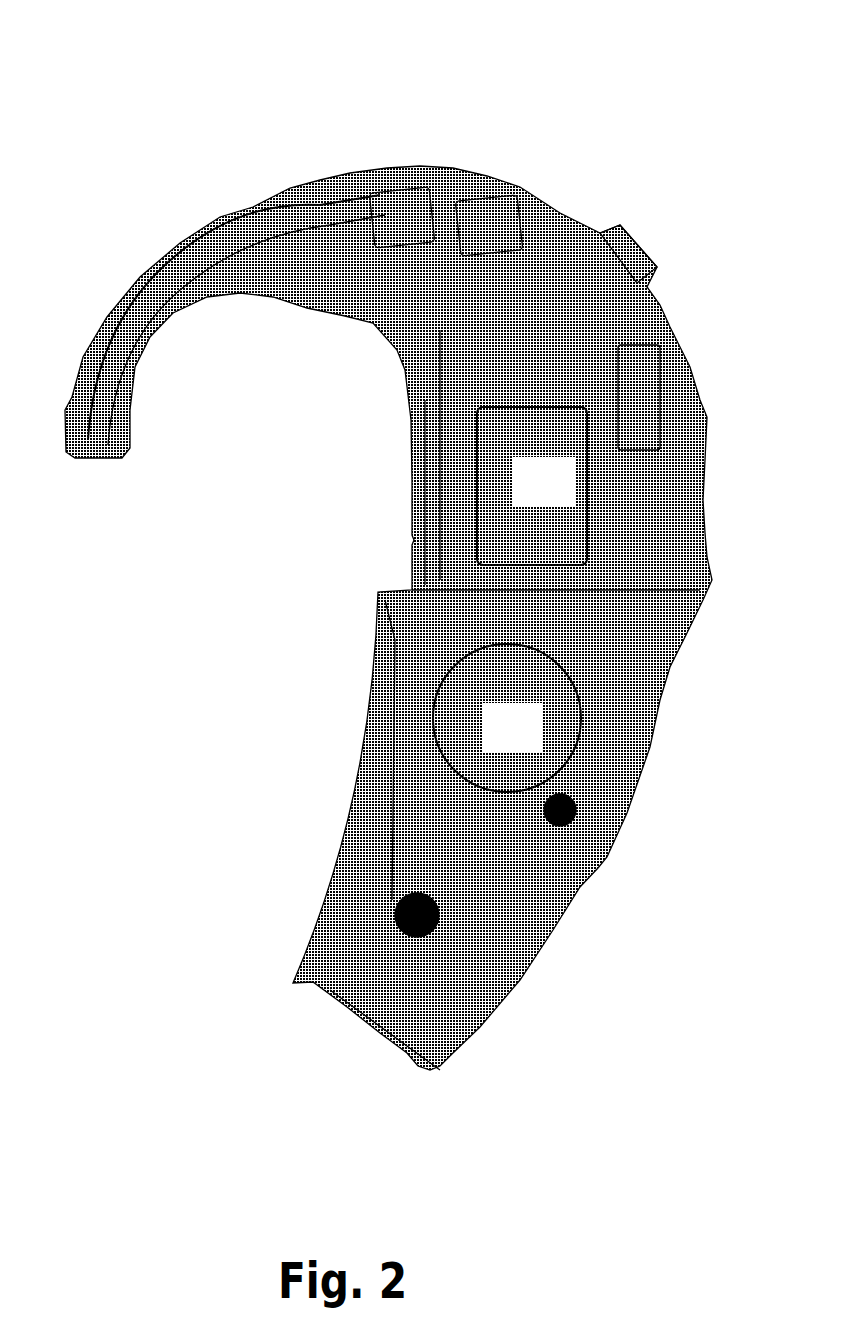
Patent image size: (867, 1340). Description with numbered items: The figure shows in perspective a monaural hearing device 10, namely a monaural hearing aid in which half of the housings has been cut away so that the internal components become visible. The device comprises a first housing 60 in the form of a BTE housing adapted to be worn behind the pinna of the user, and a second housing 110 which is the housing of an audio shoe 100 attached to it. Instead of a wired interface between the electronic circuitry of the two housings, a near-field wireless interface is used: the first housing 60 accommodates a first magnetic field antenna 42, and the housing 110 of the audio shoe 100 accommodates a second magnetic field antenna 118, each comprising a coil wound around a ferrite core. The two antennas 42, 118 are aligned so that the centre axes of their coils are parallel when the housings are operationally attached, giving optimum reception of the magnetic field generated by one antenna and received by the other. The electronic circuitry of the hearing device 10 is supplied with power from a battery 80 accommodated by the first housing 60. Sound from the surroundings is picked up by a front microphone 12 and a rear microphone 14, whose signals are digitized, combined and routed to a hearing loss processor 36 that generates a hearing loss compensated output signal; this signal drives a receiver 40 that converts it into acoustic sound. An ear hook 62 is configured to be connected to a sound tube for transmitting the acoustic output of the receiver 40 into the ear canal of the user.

The monaural hearing device 10 is at (152, 93).
The front microphone 12 is at (407, 200).
The rear microphone 14 is at (507, 210).
The hearing loss processor 36 is at (663, 402).
The receiver 40 is at (560, 498).
The first magnetic field antenna 42 is at (573, 810).
The first housing 60 is at (412, 458).
The ear hook 62 is at (220, 227).
The battery 80 is at (527, 747).
The audio shoe 100 is at (413, 1053).
The second housing 110 is at (368, 727).
The second magnetic field antenna 118 is at (403, 917).